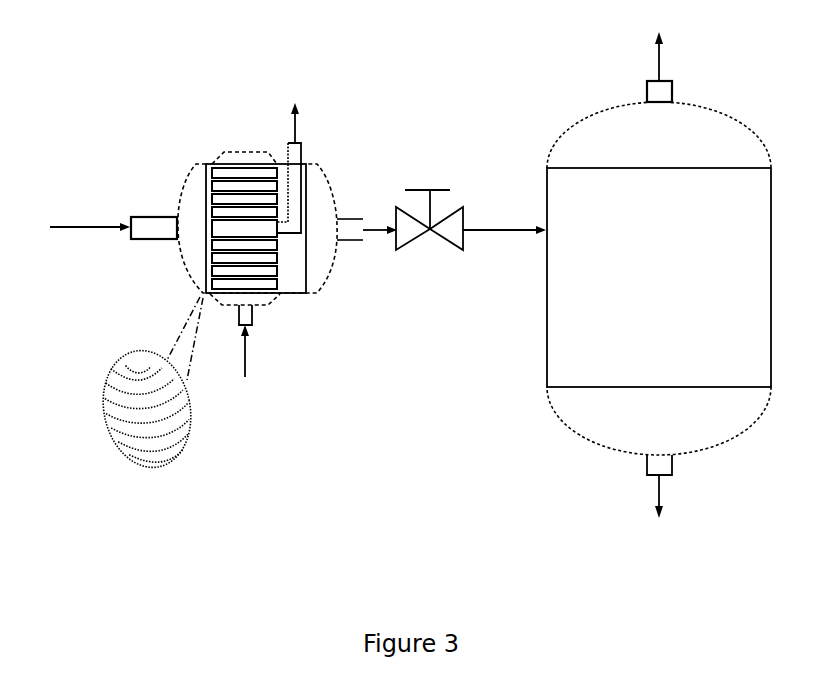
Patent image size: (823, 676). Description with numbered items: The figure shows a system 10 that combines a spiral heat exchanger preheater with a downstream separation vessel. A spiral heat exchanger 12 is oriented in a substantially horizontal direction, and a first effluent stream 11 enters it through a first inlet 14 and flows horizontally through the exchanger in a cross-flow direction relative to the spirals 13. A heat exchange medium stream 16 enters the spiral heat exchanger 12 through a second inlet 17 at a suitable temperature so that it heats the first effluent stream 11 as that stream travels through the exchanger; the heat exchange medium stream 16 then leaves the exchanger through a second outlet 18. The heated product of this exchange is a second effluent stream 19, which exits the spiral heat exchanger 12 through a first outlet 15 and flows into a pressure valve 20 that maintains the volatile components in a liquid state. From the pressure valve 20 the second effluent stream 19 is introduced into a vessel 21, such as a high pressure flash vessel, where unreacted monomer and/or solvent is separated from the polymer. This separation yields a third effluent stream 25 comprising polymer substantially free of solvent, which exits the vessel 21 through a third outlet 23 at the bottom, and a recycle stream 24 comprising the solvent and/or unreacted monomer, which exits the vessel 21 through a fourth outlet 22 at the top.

The system 10 is at (59, 133).
The first effluent stream 11 is at (68, 225).
The spiral heat exchanger 12 is at (192, 205).
The spirals 13 is at (190, 420).
The first inlet 14 is at (149, 229).
The first outlet 15 is at (350, 230).
The heat exchange medium stream 16 is at (273, 234).
The second inlet 17 is at (253, 323).
The second outlet 18 is at (296, 157).
The second effluent stream 19 is at (504, 250).
The pressure valve 20 is at (408, 228).
The vessel 21 is at (571, 394).
The fourth outlet 22 is at (658, 97).
The third outlet 23 is at (658, 472).
The recycle stream 24 is at (658, 47).
The third effluent stream 25 is at (658, 514).